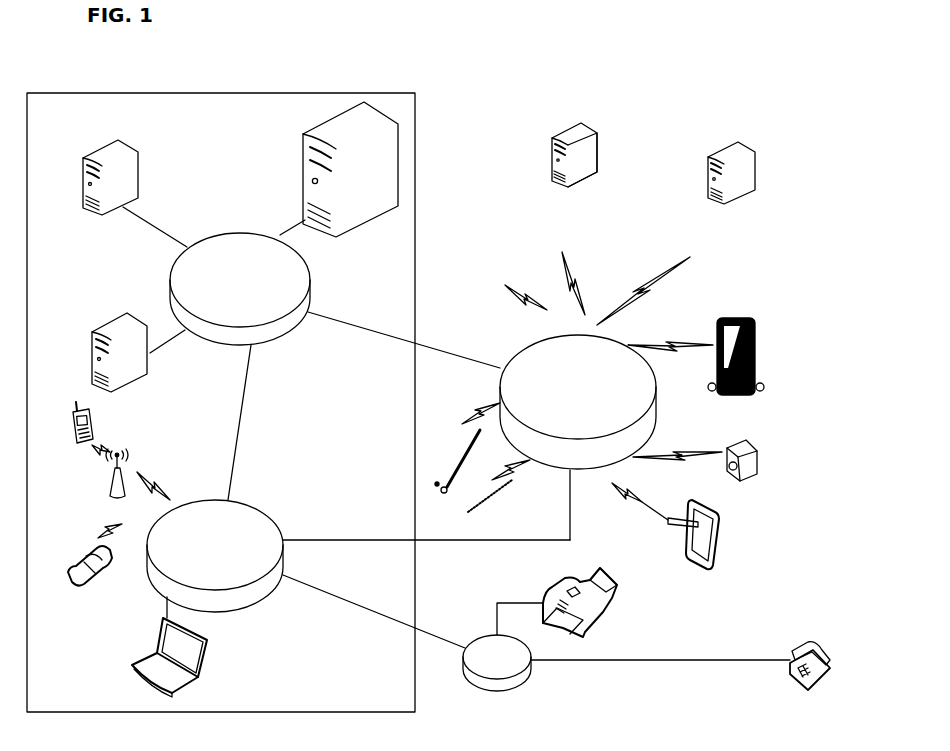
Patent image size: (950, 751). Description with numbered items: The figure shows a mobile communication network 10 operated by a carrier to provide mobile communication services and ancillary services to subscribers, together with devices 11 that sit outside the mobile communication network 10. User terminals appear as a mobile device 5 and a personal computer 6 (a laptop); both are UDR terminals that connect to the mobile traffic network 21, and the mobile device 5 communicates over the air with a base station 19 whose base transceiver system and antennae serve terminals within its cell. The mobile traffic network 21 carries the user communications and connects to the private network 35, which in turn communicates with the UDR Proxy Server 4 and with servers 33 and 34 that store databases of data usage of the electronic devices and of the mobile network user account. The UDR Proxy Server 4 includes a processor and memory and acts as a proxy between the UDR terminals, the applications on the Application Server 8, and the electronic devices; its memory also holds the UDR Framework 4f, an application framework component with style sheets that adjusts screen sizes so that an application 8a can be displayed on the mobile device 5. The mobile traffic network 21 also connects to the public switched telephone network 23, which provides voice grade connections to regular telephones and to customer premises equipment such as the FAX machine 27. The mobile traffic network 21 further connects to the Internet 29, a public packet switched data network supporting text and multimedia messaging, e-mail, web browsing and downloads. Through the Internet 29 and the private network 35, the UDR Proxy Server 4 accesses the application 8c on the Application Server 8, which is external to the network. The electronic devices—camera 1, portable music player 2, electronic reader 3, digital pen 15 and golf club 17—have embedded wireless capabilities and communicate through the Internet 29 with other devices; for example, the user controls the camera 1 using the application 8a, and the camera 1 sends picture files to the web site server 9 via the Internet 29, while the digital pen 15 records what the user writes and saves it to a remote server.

The camera 1 is at (770, 458).
The portable music player 2 is at (767, 342).
The electronic reader (eReader) 3 is at (732, 532).
The UDR Proxy Server 4 is at (322, 198).
The UDR Framework 4f is at (292, 152).
The mobile device 5 is at (74, 445).
The personal computer 6 is at (121, 670).
The Application Server 8 is at (571, 179).
The application 8a is at (611, 139).
The application 8c is at (539, 142).
The web site server 9 is at (739, 212).
The mobile communication network 10 is at (350, 663).
The devices outside the mobile communication network 11 is at (815, 155).
The digital pen 15 is at (509, 496).
The golf club 17 is at (448, 437).
The base station 19 is at (97, 496).
The mobile traffic network 21 is at (215, 556).
The public switched telephone network (PSTN) 23 is at (497, 663).
The FAX machine 27 is at (622, 615).
The Internet 29 is at (611, 377).
The server 33 is at (112, 224).
The server 34 is at (131, 391).
The private network 35 is at (240, 289).